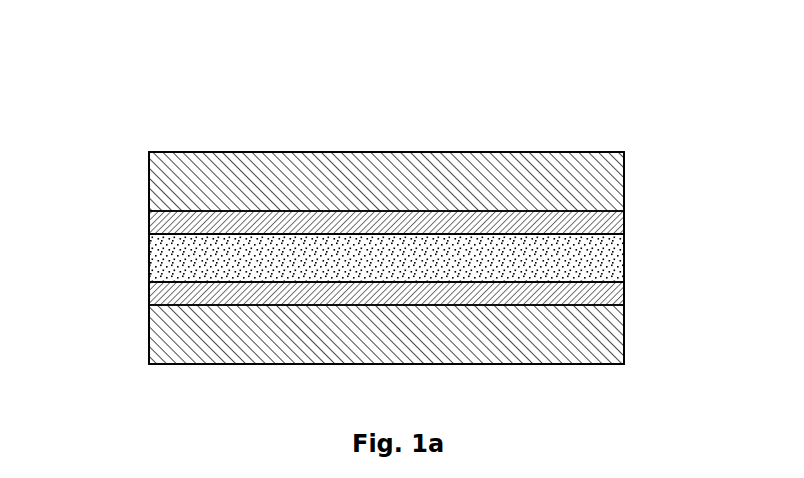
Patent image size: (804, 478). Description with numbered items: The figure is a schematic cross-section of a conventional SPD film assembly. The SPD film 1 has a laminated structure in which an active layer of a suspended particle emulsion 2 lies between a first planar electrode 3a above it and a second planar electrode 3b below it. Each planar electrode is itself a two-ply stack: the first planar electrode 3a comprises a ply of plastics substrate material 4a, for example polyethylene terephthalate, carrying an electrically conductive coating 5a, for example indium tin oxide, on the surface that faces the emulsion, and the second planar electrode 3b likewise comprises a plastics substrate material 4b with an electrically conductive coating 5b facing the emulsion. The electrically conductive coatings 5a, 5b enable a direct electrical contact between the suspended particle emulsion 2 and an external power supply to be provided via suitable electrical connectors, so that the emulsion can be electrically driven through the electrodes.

The SPD film 1 is at (503, 109).
The suspended particle emulsion 2 is at (149, 258).
The first planar electrode 3a is at (118, 152).
The second planar electrode 3b is at (118, 282).
The plastics substrate material 4a is at (607, 178).
The plastics substrate material 4b is at (613, 335).
The electrically conductive coating 5a is at (613, 220).
The electrically conductive coating 5b is at (615, 293).